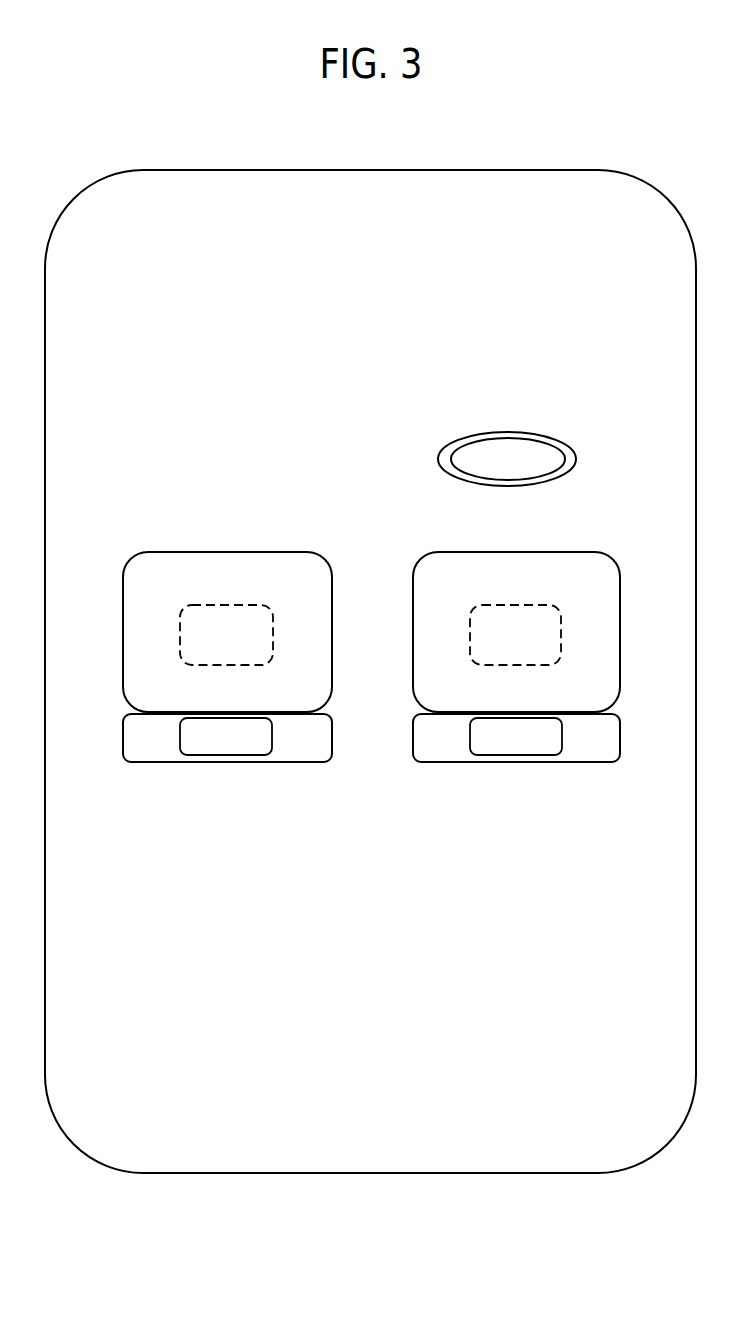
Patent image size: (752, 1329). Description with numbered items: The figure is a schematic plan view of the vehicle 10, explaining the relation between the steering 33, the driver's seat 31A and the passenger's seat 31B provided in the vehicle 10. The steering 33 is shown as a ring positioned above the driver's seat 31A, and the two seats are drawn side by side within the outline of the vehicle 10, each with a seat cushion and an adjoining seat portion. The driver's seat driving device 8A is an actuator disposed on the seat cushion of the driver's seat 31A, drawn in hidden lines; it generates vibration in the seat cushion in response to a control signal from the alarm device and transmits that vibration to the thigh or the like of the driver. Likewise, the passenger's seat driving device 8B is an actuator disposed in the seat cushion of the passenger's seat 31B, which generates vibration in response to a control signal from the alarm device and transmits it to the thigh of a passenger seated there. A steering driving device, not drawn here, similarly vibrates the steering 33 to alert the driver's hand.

The vehicle 10 is at (508, 170).
The steering 33 is at (528, 432).
The driver's seat 31A is at (554, 552).
The passenger's seat 31B is at (262, 552).
The driver's seat driving device 8A is at (561, 640).
The passenger's seat driving device 8B is at (273, 640).